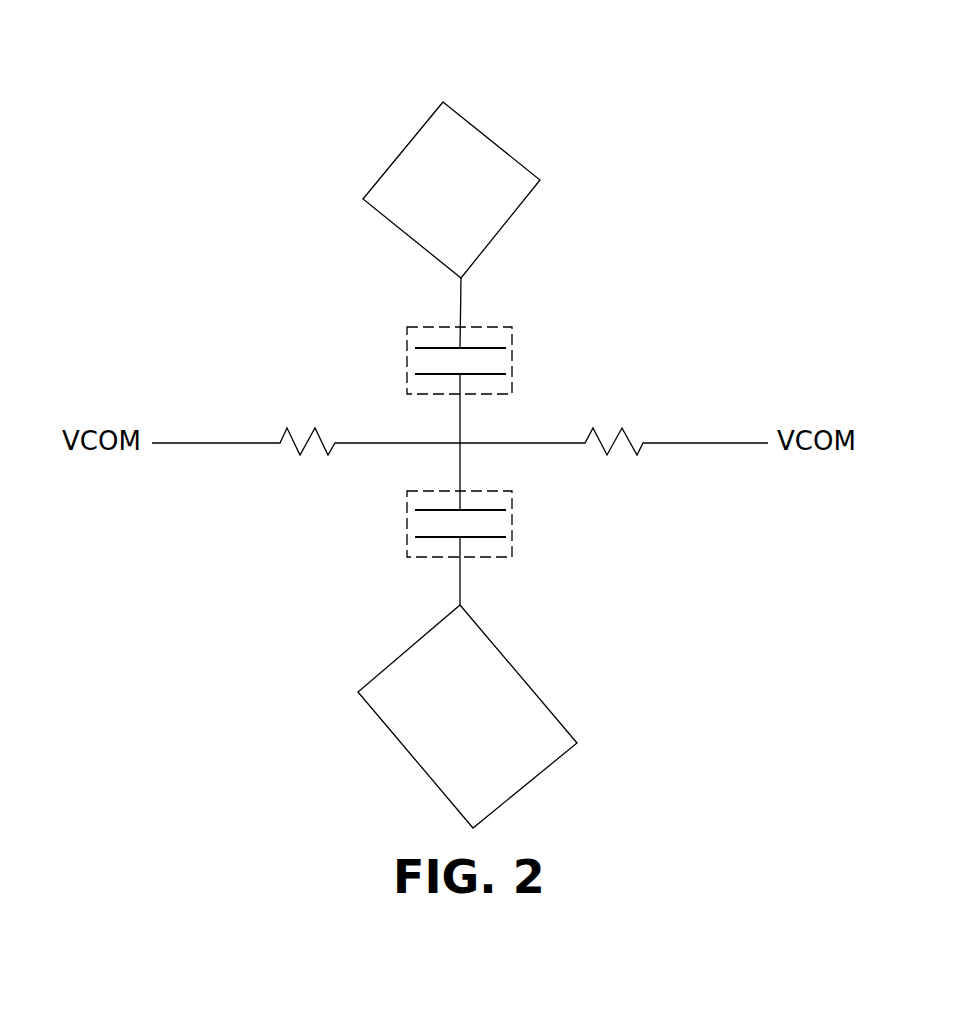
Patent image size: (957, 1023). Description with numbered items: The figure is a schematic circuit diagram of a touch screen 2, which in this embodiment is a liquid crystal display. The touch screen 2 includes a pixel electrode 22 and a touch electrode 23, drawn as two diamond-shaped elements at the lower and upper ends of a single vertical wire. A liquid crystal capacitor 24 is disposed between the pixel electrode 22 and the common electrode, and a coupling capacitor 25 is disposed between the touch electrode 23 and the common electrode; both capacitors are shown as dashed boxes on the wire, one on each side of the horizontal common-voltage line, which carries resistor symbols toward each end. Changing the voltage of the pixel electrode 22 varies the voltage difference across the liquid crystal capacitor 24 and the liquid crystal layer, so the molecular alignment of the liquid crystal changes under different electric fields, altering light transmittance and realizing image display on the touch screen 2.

The touch screen 2 is at (437, 60).
The pixel electrode 22 is at (505, 705).
The touch electrode 23 is at (513, 184).
The liquid crystal capacitor 24 is at (506, 524).
The coupling capacitor 25 is at (506, 360).